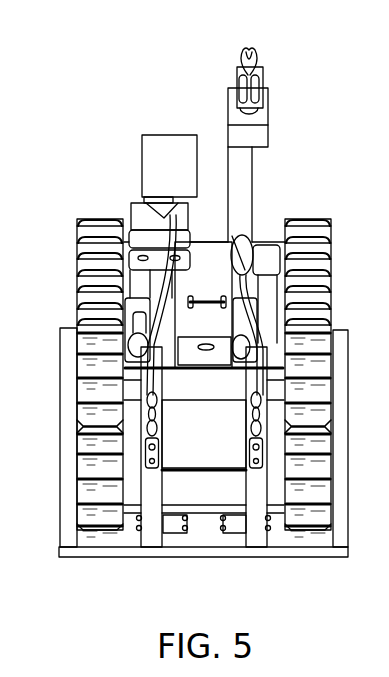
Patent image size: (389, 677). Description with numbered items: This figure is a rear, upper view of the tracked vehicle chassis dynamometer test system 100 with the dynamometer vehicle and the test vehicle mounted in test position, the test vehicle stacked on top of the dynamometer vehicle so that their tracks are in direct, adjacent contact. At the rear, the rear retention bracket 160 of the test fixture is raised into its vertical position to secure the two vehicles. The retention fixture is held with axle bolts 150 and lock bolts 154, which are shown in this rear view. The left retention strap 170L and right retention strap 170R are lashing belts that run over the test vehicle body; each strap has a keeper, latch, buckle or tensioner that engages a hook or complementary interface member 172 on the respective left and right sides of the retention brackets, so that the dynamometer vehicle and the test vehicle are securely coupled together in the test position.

The tracked vehicle chassis dynamometer test system 100 is at (98, 100).
The axle bolts 150 is at (268, 526).
The lock bolts 154 is at (266, 516).
The rear retention bracket 160 is at (257, 490).
The left retention strap 170L is at (173, 250).
The right retention strap 170R is at (230, 233).
The hook 172 is at (263, 462).